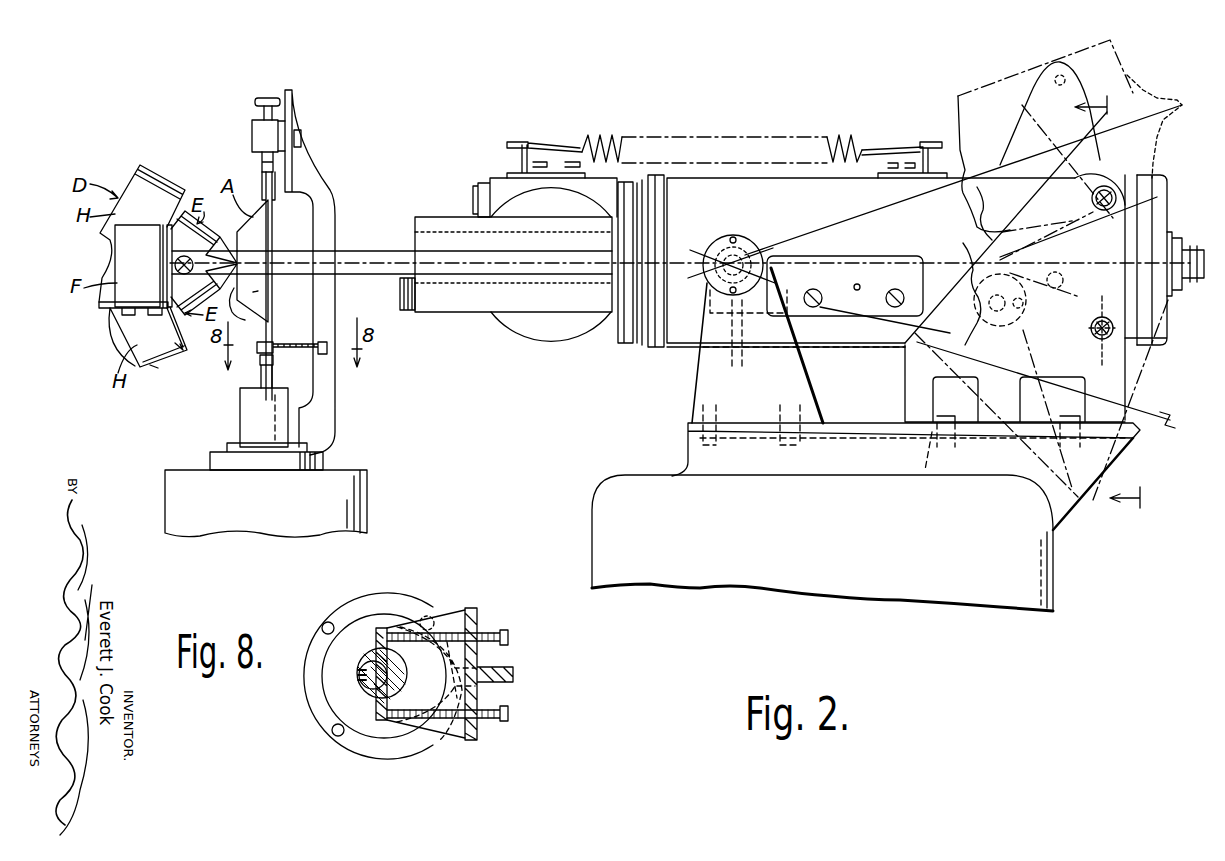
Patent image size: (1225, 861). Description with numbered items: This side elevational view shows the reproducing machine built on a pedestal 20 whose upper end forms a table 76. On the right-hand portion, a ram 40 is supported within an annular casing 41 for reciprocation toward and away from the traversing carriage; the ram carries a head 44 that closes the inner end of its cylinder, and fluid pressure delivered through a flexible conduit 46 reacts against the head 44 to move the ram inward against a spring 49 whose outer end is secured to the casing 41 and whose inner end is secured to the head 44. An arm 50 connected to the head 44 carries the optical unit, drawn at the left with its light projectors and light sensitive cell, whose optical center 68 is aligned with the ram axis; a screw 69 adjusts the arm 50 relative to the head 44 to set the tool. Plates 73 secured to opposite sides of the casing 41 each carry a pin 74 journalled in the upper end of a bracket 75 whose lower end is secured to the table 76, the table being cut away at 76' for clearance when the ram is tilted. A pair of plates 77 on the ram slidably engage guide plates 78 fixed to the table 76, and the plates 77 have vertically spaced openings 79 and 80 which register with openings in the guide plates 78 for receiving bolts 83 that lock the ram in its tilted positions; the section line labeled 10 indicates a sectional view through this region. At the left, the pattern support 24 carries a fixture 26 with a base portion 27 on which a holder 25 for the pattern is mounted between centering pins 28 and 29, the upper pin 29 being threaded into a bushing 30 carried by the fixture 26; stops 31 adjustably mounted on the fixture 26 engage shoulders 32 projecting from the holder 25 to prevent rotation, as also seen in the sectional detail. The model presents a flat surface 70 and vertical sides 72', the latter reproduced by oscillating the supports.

In FIG. 2, the section line 10- 10 is at (1122, 302).
In FIG. 2, the pedestal 20 is at (598, 556).
In FIG. 2, the support for the pattern 24 is at (360, 495).
In FIG. 2, the holder 25 is at (278, 233).
In FIG. 8, the holder 25 is at (372, 658).
In FIG. 2, the fixture 26 is at (328, 299).
In FIG. 8, the fixture 26 is at (412, 615).
In FIG. 2, the base portion 27 is at (246, 417).
In FIG. 2, the centering pin 28 is at (260, 363).
In FIG. 2, the centering pin 29 is at (260, 160).
In FIG. 2, the bushing 30 is at (252, 128).
In FIG. 2, the stops 31 is at (270, 338).
In FIG. 8, the stops 31 is at (470, 640).
In FIG. 8, the shoulders 32 is at (382, 630).
In FIG. 2, the ram 40 is at (645, 348).
In FIG. 2, the annular casing 41 is at (783, 180).
In FIG. 2, the head of the ram 44 is at (612, 328).
In FIG. 2, the flexible conduit 46 is at (1198, 250).
In FIG. 2, the spring 49 is at (600, 134).
In FIG. 2, the arm 50 is at (360, 251).
In FIG. 2, the optical center 68 is at (175, 263).
In FIG. 2, the screw 69 is at (408, 310).
In FIG. 2, the flat surface 70 is at (245, 309).
In FIG. 2, the vertical sides 72' is at (283, 295).
In FIG. 2, the plates 73 is at (885, 262).
In FIG. 2, the pin 74 is at (762, 238).
In FIG. 2, the brackets 75 is at (703, 383).
In FIG. 2, the table 76 is at (906, 434).
In FIG. 2, the cut away 76' is at (916, 472).
In FIG. 2, the plates 77 is at (975, 255).
In FIG. 2, the guide plates 78 is at (912, 368).
In FIG. 2, the opening 79 is at (1062, 90).
In FIG. 2, the opening 80 is at (1065, 505).
In FIG. 2, the bolts 83 is at (1092, 197).